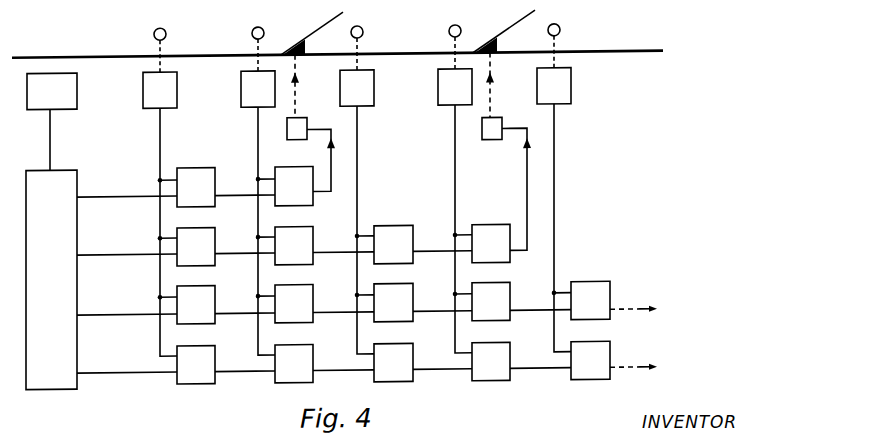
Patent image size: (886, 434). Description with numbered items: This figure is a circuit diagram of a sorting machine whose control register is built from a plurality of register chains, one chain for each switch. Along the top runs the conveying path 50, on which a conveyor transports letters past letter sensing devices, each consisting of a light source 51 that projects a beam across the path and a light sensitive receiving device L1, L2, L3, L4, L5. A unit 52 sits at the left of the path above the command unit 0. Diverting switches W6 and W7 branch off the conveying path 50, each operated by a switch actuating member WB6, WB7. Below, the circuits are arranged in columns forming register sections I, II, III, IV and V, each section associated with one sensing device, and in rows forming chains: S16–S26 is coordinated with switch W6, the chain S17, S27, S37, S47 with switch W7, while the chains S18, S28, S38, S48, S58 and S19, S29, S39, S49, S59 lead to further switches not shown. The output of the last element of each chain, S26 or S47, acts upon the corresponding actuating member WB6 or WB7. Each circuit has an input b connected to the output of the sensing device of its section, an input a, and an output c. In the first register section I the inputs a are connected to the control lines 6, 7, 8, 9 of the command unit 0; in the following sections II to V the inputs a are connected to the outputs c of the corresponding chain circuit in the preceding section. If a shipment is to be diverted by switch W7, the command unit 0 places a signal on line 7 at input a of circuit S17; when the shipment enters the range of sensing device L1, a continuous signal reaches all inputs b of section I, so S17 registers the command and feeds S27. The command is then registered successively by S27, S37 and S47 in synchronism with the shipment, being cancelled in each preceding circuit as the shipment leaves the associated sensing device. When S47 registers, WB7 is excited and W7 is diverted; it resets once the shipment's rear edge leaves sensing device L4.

The conveying path 50 is at (100, 55).
The light source 51 is at (253, 29).
The control unit 52 is at (58, 108).
The command unit 0 is at (51, 295).
The control line 6 is at (122, 196).
The control line 7 is at (122, 254).
The control line 8 is at (121, 314).
The control line 9 is at (121, 372).
The light sensitive receiving device L1 is at (143, 97).
The light sensitive receiving device L2 is at (241, 97).
The light sensitive receiving device L3 is at (365, 108).
The light sensitive receiving device L4 is at (438, 99).
The light sensitive receiving device L5 is at (563, 108).
The switch W6 is at (312, 33).
The switch W7 is at (504, 32).
The switch actuating member WB6 is at (319, 123).
The switch actuating member WB7 is at (514, 151).
The circuit S16 is at (196, 187).
The circuit S17 is at (196, 247).
The circuit S18 is at (196, 305).
The circuit S19 is at (196, 365).
The circuit S26 is at (294, 186).
The circuit S27 is at (294, 246).
The circuit S28 is at (294, 304).
The circuit S29 is at (294, 364).
The circuit S37 is at (393, 244).
The circuit S38 is at (393, 302).
The circuit S39 is at (393, 362).
The circuit S47 is at (491, 243).
The circuit S48 is at (491, 301).
The circuit S49 is at (491, 361).
The circuit S58 is at (590, 300).
The circuit S59 is at (590, 360).
The input a is at (317, 261).
The input b is at (364, 260).
The output c is at (373, 260).
The register section I is at (190, 404).
The register section II is at (285, 402).
The register section III is at (392, 402).
The register section IV is at (492, 401).
The register section V is at (589, 395).